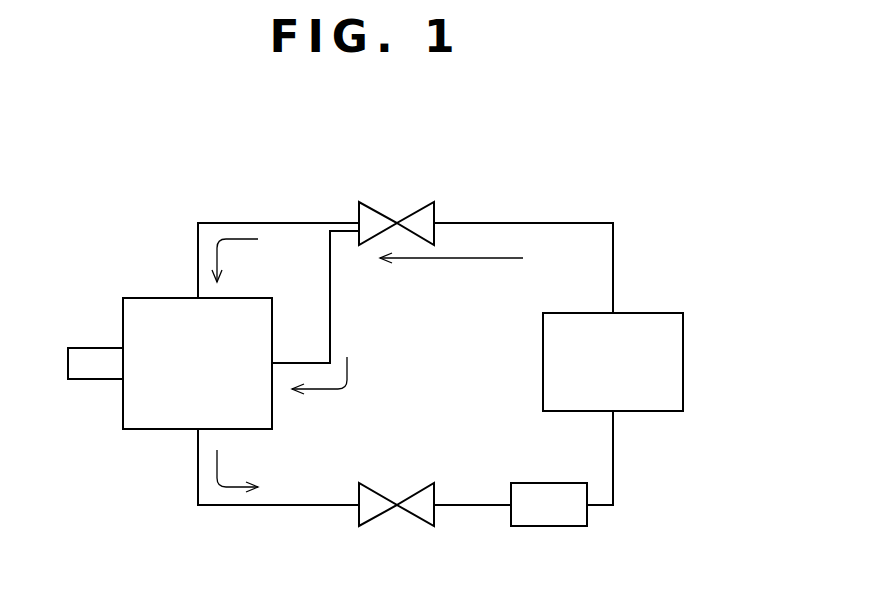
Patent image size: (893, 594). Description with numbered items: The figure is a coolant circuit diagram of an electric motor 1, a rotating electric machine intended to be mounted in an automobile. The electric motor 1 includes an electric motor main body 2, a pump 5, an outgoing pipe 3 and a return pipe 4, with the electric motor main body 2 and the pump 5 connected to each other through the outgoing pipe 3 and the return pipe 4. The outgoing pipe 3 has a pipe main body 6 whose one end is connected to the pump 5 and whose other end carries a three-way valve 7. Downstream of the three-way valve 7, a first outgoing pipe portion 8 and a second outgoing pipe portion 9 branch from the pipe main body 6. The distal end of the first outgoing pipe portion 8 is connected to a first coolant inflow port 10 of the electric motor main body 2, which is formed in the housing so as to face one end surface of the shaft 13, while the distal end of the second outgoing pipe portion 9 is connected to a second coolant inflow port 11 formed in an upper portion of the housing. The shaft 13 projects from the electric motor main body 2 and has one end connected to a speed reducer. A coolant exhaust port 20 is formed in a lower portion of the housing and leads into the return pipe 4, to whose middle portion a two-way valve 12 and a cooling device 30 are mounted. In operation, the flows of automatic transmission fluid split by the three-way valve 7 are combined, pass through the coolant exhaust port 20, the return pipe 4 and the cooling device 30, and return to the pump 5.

The electric motor 1 is at (683, 230).
The electric motor main body 2 is at (143, 430).
The outgoing pipe 3 is at (511, 190).
The return pipe 4 is at (237, 507).
The pump 5 is at (683, 361).
The pipe main body 6 is at (573, 222).
The three-way valve 7 is at (405, 213).
The first outgoing pipe portion 8 is at (330, 296).
The second outgoing pipe portion 9 is at (228, 222).
The first coolant inflow port 10 is at (273, 367).
The second coolant inflow port 11 is at (197, 298).
The two-way valve 12 is at (400, 508).
The shaft 13 is at (92, 348).
The coolant exhaust port 20 is at (188, 430).
The cooling device 30 is at (547, 527).